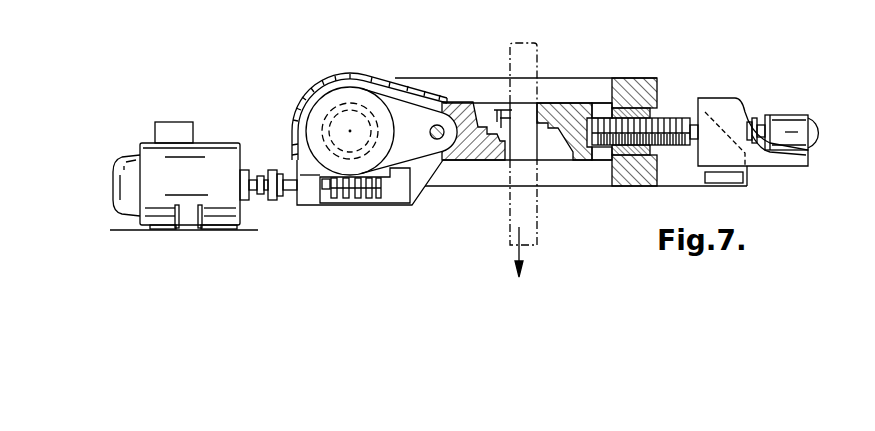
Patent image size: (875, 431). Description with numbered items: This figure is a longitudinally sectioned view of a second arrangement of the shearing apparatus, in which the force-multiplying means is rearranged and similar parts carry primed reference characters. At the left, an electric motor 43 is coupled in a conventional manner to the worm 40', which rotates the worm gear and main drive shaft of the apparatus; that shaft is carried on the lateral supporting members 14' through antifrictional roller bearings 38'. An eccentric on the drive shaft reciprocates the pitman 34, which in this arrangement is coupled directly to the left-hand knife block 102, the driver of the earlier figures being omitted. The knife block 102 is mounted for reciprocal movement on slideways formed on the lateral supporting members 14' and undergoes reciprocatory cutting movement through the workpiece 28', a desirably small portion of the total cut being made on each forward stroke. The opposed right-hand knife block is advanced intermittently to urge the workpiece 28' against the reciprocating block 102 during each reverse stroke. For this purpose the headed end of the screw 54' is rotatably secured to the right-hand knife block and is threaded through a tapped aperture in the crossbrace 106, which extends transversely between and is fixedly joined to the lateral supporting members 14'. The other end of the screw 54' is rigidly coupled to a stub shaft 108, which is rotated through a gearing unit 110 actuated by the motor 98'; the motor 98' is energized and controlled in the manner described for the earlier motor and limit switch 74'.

The electric motor 43 is at (213, 143).
The roller bearings 38' is at (369, 113).
The pitman 34 is at (393, 77).
The left-hand knife block 102 is at (463, 101).
The limit switch 74' is at (495, 75).
The workpiece 28' is at (549, 140).
The lateral supporting members 14' is at (571, 109).
The crossbrace 106 is at (632, 78).
The screw 54' is at (628, 97).
The stub shaft 108 is at (698, 97).
The gearing unit 110 is at (740, 108).
The motor 98' is at (800, 115).
The worm 40' is at (365, 203).